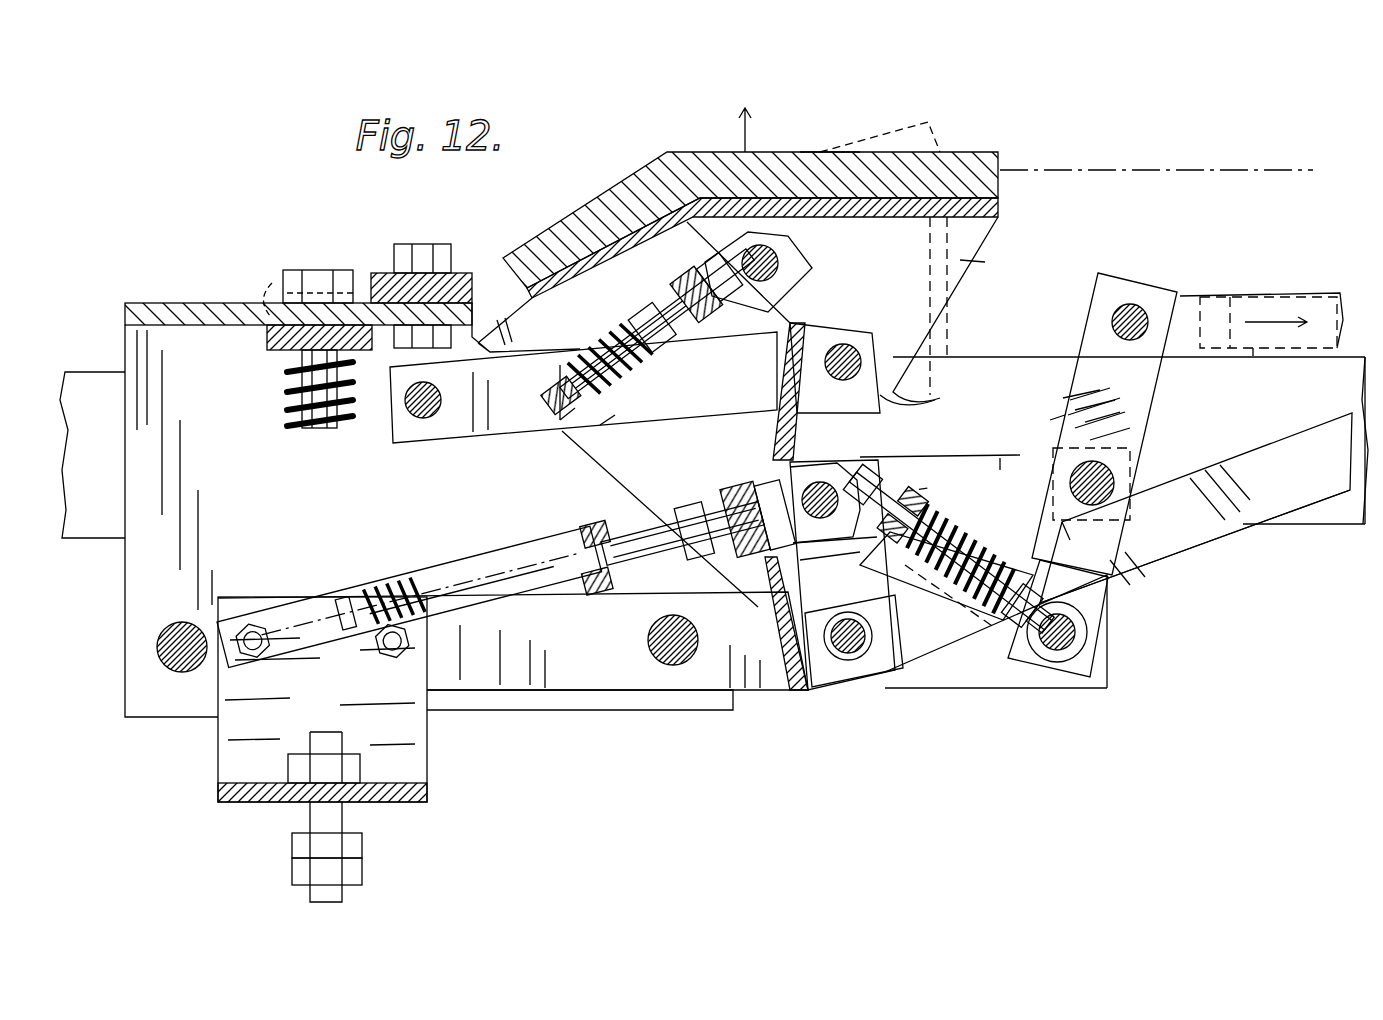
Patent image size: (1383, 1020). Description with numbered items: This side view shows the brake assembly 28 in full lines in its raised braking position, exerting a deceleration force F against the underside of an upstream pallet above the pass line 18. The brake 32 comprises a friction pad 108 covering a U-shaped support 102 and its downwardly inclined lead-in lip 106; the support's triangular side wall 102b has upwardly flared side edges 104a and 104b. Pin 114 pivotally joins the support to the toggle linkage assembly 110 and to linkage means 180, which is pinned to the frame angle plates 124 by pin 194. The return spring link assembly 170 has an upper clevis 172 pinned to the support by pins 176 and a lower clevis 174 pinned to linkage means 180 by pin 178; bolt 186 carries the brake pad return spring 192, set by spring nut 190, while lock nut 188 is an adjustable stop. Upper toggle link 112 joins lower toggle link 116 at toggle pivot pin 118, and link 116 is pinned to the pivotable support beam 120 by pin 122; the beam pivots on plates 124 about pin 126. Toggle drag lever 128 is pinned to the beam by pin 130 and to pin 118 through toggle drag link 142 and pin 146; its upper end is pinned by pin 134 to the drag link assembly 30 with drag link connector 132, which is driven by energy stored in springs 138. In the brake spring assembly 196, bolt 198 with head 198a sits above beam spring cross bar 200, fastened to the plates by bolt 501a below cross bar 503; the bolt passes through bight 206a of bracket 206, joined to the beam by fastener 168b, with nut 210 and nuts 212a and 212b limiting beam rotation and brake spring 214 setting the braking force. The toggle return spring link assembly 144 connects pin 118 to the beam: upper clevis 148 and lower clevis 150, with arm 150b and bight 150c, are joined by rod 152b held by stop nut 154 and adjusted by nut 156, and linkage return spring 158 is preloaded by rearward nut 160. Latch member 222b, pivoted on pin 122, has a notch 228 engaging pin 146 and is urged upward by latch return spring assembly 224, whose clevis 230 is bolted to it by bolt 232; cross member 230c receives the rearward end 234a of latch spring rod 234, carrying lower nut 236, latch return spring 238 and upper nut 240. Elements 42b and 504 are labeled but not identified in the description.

The pass line 18 is at (1178, 170).
The brake assembly 28 is at (679, 131).
The drag link assembly 30 is at (1290, 293).
The friction pad and mounting bracket assembly 32 is at (977, 139).
The frame member 42b is at (82, 550).
The support 102 is at (968, 304).
The side wall 102b is at (925, 400).
The side edge 104a is at (631, 287).
The side edge 104b is at (985, 262).
The lip 106 is at (528, 307).
The friction pad 108 is at (818, 152).
The toggle linkage assembly 110 is at (762, 437).
The upper toggle link 112 is at (870, 426).
The pin 114 is at (870, 335).
The lower toggle link 116 is at (905, 690).
The toggle pivot pin 118 is at (768, 480).
The pivotable support beam 120 is at (1000, 688).
The pin 122 is at (875, 630).
The frame angle plates 124 is at (180, 303).
The pin 126 is at (648, 648).
The toggle drag lever 128 is at (1140, 385).
The pivot pin 130 is at (1075, 633).
The drag link connector 132 is at (1190, 296).
The pivot pin 134 is at (1135, 310).
The cock and drag link compression springs 138 is at (1253, 348).
The toggle drag link 142 is at (1007, 447).
The toggle return spring link assembly 144 is at (401, 563).
The pin 146 is at (1110, 470).
The upper toggle return spring clevis 148 is at (717, 496).
The lower toggle return spring clevis 150 is at (304, 661).
The lower clevis arm 150b is at (284, 588).
The lower clevis cross member 150c is at (634, 512).
The clevis spring supporting rod 152b is at (612, 575).
The stop nut 154 is at (830, 548).
The adjustment nut 156 is at (704, 565).
The linkage return spring 158 is at (445, 642).
The rearward nut 160 is at (356, 581).
The linkage return pivot pin 168b is at (248, 672).
The friction pad pivot return spring link assembly 170 is at (605, 462).
The upper spring link clevis 172 is at (786, 246).
The lower spring link clevis 174 is at (633, 418).
The pivot pins 176 is at (780, 285).
The pivot pin 178 is at (609, 318).
The linkage means 180 is at (420, 430).
The intermediate bolt 186 is at (680, 304).
The lock nut 188 is at (691, 375).
The spring nut 190 is at (560, 420).
The brake pad return spring 192 is at (600, 425).
The pin 194 is at (400, 445).
The brake spring assembly 196 is at (280, 406).
The brake spring-supporting bolt 198 is at (308, 822).
The head 198a is at (308, 271).
The beam spring cross bar 200 is at (267, 342).
The bracket 206 is at (430, 728).
The bight portion 206a is at (427, 792).
The nut 210 is at (360, 768).
The nut 212a is at (362, 845).
The nut 212b is at (362, 874).
The brake spring 214 is at (288, 426).
The latch member 222b is at (1213, 520).
The latch return spring link assembly 224 is at (955, 512).
The notch 228 is at (1105, 541).
The latch return clevis 230 is at (968, 527).
The cross member 230c is at (938, 481).
The bolts 232 is at (937, 596).
The latch spring supporting rod 234 is at (1053, 671).
The rearward end 234a is at (930, 448).
The lower latch spring nut 236 is at (983, 610).
The latch return spring 238 is at (835, 566).
The upper latch spring nut 240 is at (825, 483).
The bolt 501a is at (350, 270).
The cross bar 503 is at (480, 276).
The nut 504 is at (425, 250).
The braking force F is at (741, 113).